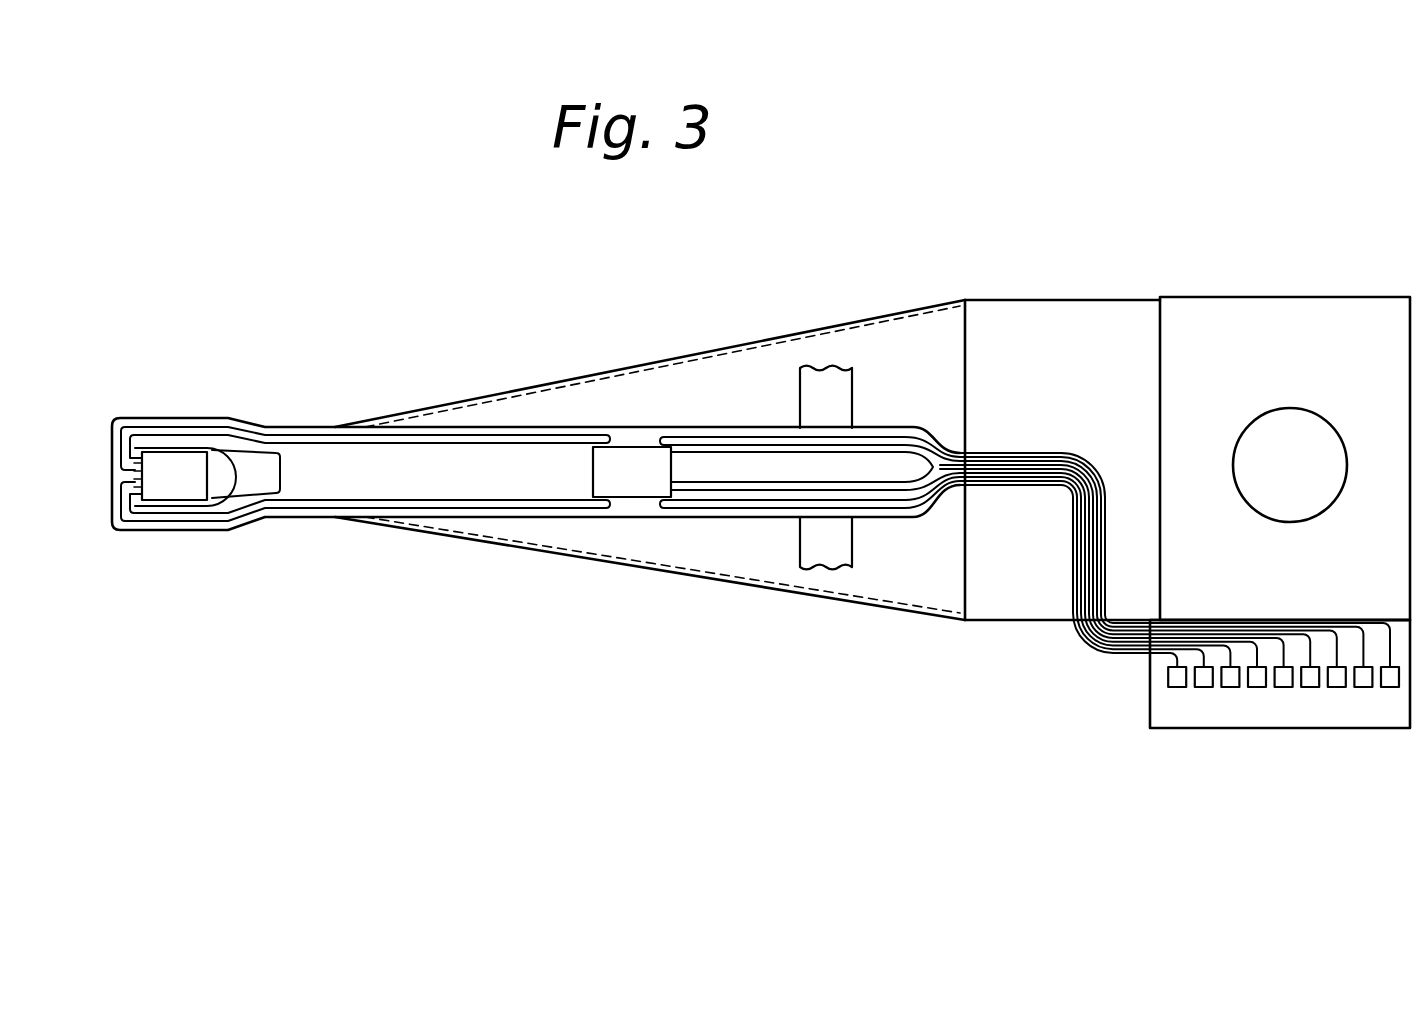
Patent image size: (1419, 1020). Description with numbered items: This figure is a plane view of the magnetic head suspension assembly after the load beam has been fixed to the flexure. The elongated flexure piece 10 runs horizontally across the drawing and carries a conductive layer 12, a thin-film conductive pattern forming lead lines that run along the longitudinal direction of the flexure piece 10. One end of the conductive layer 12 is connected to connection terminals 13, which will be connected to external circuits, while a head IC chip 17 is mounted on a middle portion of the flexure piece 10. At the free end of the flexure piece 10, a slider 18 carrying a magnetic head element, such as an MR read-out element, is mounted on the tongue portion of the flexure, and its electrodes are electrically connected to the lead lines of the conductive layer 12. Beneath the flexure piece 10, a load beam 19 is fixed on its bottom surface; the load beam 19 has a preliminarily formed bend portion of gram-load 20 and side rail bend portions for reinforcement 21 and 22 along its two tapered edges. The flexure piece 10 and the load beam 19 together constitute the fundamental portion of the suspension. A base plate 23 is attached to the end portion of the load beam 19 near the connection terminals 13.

The flexure piece 10 is at (890, 467).
The conductive layer 12 is at (500, 442).
The connection terminals 13 is at (1390, 687).
The head IC chip 17 is at (627, 473).
The slider 18 is at (198, 457).
The load beam 19 is at (1077, 333).
The bend portion of gram-load 20 is at (973, 325).
The side rail bend portion for reinforcement 21 is at (808, 326).
The side rail bend portion for reinforcement 22 is at (790, 598).
The base plate 23 is at (1270, 327).